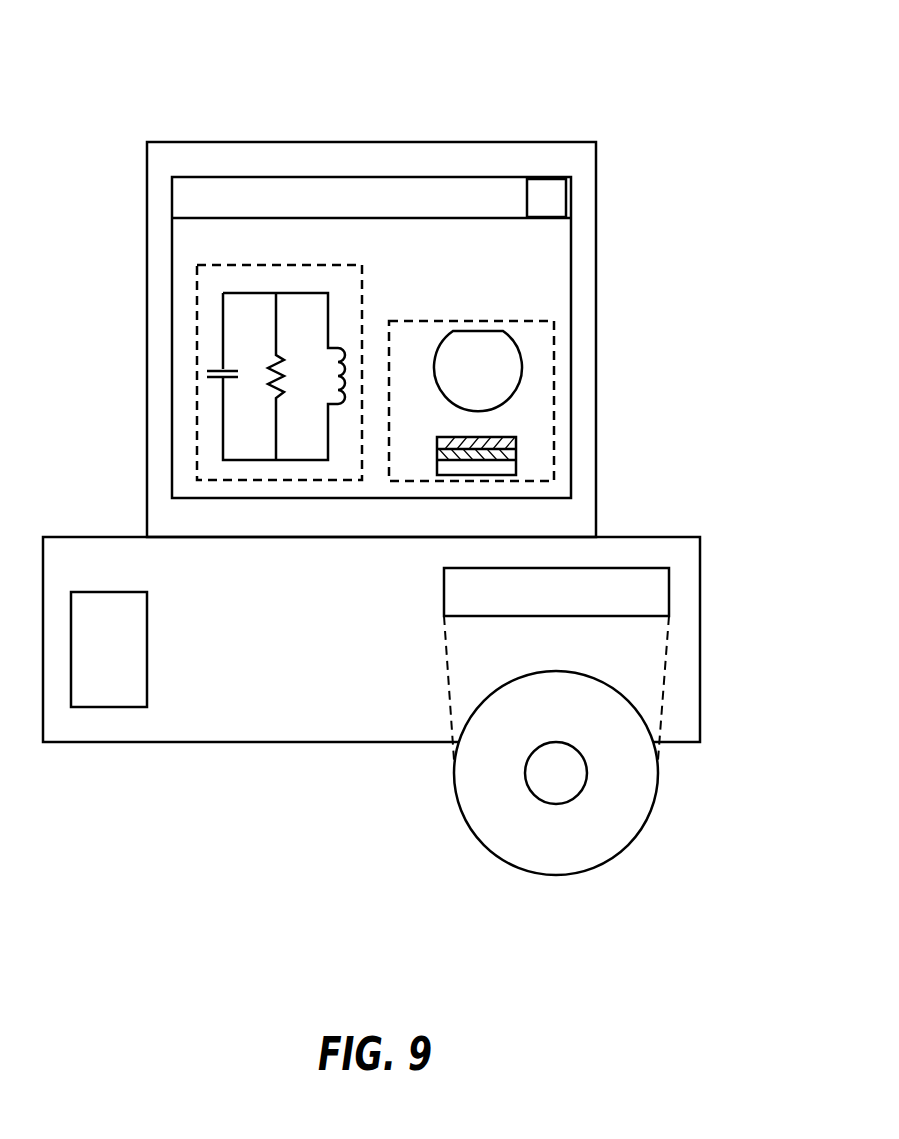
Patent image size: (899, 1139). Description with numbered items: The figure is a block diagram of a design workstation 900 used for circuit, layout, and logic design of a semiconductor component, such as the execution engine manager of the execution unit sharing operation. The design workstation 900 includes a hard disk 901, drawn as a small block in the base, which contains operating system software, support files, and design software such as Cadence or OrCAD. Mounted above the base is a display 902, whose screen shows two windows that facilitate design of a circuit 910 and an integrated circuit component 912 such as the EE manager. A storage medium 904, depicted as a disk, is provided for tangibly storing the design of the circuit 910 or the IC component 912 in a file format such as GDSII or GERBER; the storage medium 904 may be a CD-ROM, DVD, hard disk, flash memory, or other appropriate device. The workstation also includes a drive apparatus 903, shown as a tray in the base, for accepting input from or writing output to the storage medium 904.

The design workstation 900 is at (88, 76).
The hard disk 901 is at (147, 620).
The display 902 is at (549, 142).
The drive apparatus 903 is at (656, 568).
The storage medium 904 is at (553, 875).
The circuit 910 is at (362, 277).
The integrated circuit (IC) component 912 is at (460, 321).